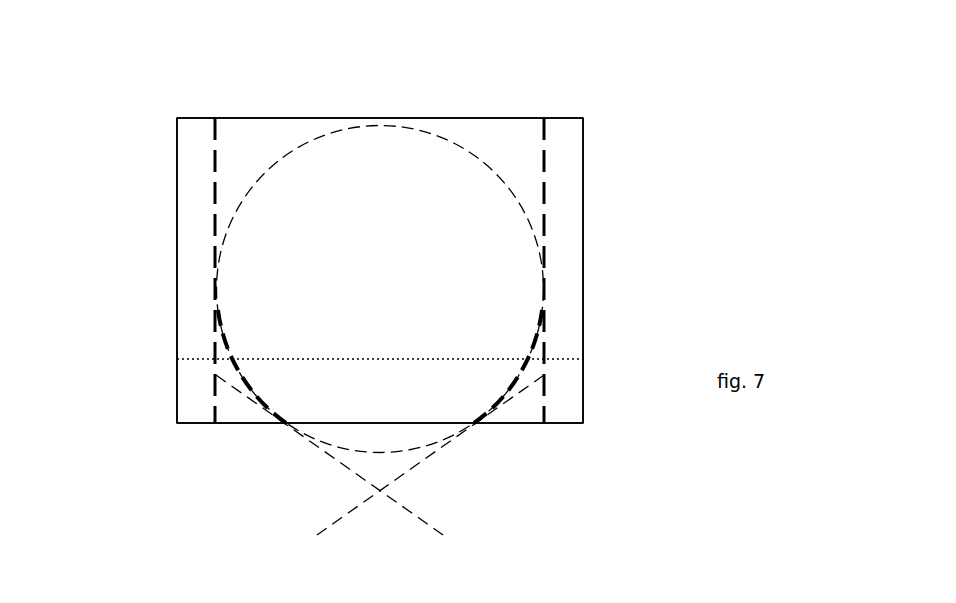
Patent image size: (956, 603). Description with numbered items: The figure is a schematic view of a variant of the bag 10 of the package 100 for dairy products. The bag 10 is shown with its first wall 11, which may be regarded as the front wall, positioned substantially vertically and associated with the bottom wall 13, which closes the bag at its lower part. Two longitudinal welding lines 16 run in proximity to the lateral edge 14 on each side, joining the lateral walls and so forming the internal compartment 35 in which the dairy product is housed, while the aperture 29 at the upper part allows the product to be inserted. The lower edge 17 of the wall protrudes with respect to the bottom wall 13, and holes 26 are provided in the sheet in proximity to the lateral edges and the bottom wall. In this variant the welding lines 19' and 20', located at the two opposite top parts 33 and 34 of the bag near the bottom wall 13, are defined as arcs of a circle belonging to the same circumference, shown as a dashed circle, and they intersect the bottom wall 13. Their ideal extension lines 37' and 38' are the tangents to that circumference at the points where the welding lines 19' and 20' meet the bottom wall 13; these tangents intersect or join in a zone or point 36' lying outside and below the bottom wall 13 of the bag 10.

The package 100 is at (606, 92).
The bag 10 is at (160, 108).
The first wall 11 is at (282, 147).
The bottom wall 13 is at (497, 359).
The lateral edge 14 is at (191, 288).
The welding lines 16 is at (214, 198).
The lower edge 17 is at (322, 422).
The welding line 19' is at (256, 365).
The welding line 20' is at (504, 365).
The holes 26 is at (186, 398).
The aperture 29 is at (460, 118).
The top part 33 is at (172, 413).
The top part 34 is at (590, 414).
The internal compartment 35 is at (544, 200).
The zone or point 36' is at (400, 522).
The ideal extension line 37' is at (329, 478).
The ideal extension line 38' is at (430, 455).